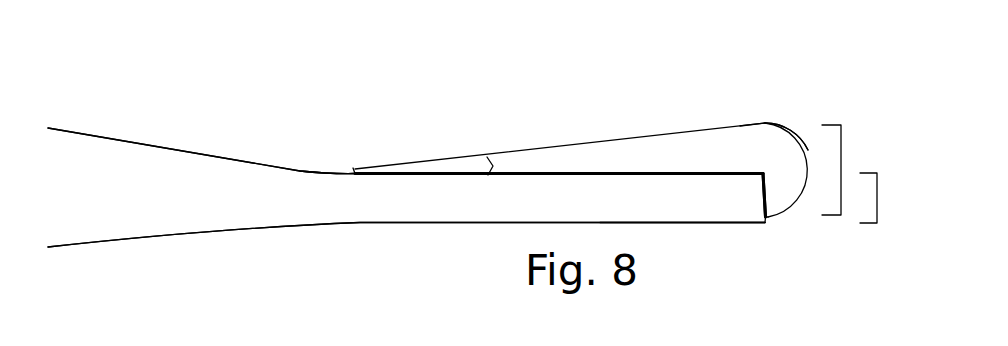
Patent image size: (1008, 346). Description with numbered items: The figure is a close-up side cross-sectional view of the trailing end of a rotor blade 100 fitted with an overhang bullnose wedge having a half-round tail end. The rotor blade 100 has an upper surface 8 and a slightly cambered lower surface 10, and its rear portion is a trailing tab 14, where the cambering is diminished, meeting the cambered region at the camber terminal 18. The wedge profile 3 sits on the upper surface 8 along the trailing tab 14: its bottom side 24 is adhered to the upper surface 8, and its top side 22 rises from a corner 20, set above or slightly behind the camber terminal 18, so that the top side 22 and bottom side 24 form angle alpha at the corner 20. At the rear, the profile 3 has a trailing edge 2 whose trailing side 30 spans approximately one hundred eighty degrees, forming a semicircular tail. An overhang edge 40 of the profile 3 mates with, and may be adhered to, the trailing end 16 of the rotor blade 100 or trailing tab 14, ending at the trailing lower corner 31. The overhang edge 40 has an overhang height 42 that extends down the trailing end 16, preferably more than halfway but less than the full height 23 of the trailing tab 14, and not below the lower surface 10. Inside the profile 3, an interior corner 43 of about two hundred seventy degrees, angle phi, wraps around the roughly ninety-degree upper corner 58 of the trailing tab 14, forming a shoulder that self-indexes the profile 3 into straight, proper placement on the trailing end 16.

The rotor blade 100 is at (392, 187).
The upper surface 8 is at (123, 138).
The lower surface 10 is at (133, 242).
The camber terminal 18 is at (313, 174).
The corner 20 is at (355, 167).
The profile 3 is at (593, 123).
The top side 22 is at (490, 157).
The bottom side 24 is at (493, 175).
The overhang edge 40 is at (777, 122).
The trailing edge 2 is at (807, 145).
The trailing side 30 is at (823, 121).
The overhang height 42 is at (844, 170).
The height 23 is at (882, 198).
The interior corner 43 is at (763, 173).
The upper corner 58 is at (760, 179).
The trailing tab 14 is at (699, 212).
The trailing end 16 is at (766, 219).
The trailing lower corner 31 is at (768, 218).